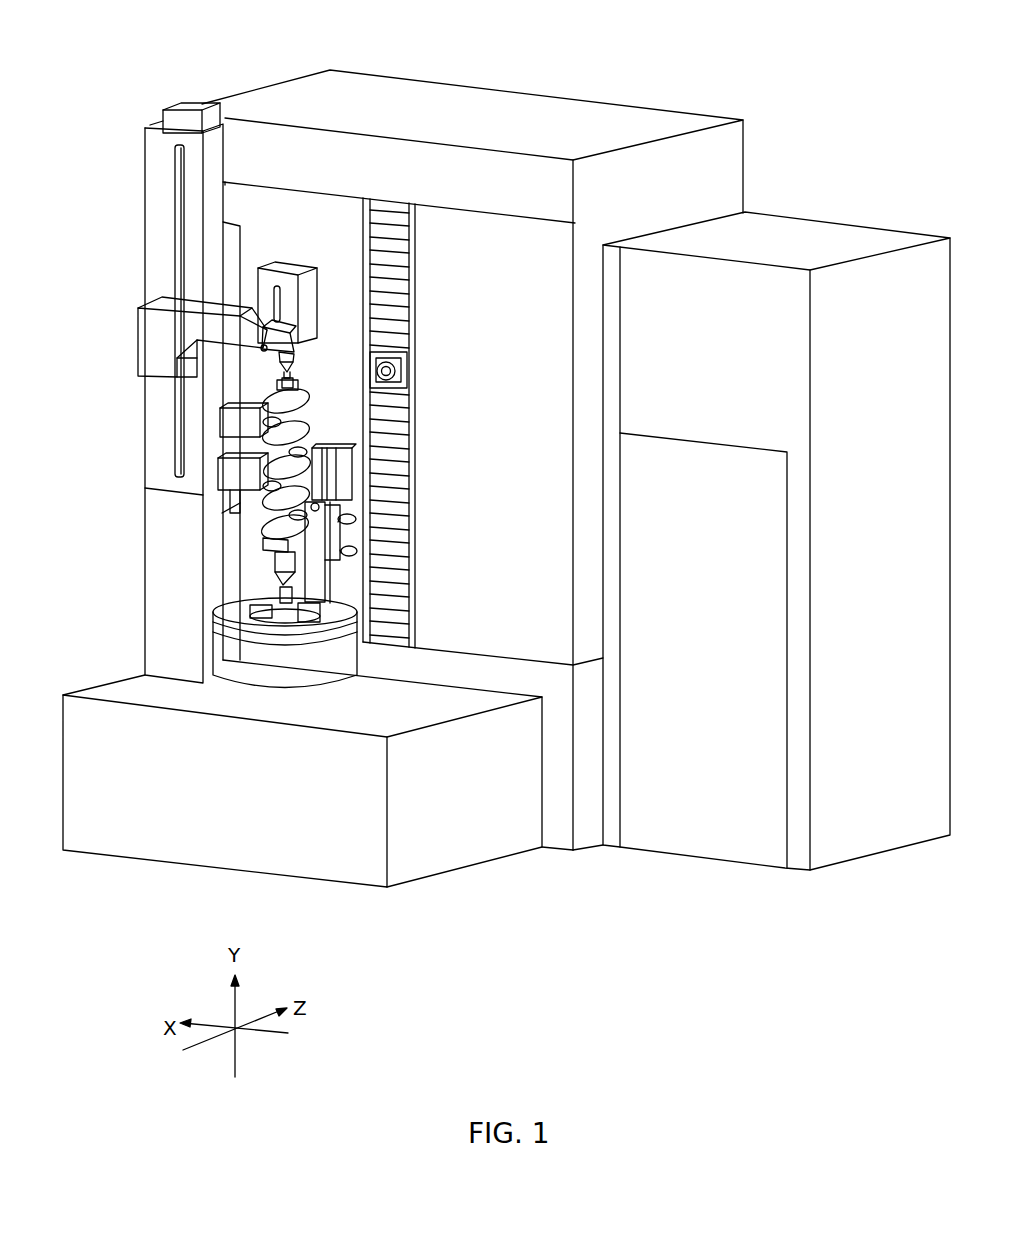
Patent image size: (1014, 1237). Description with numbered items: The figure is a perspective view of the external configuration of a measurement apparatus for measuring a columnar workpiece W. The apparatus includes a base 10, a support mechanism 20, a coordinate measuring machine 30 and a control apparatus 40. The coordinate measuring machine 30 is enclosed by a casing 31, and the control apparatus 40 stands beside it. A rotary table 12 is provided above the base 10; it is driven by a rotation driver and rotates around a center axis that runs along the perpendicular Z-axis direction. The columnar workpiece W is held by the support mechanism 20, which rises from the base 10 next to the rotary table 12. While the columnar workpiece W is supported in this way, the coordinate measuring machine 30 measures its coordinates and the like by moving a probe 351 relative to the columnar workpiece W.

The base 10 is at (298, 865).
The rotary table 12 is at (272, 638).
The support mechanism 20 is at (125, 422).
The coordinate measuring machine 30 is at (530, 98).
The casing 31 is at (318, 216).
The probe 351 is at (375, 373).
The control apparatus 40 is at (828, 232).
The columnar workpiece W is at (311, 424).